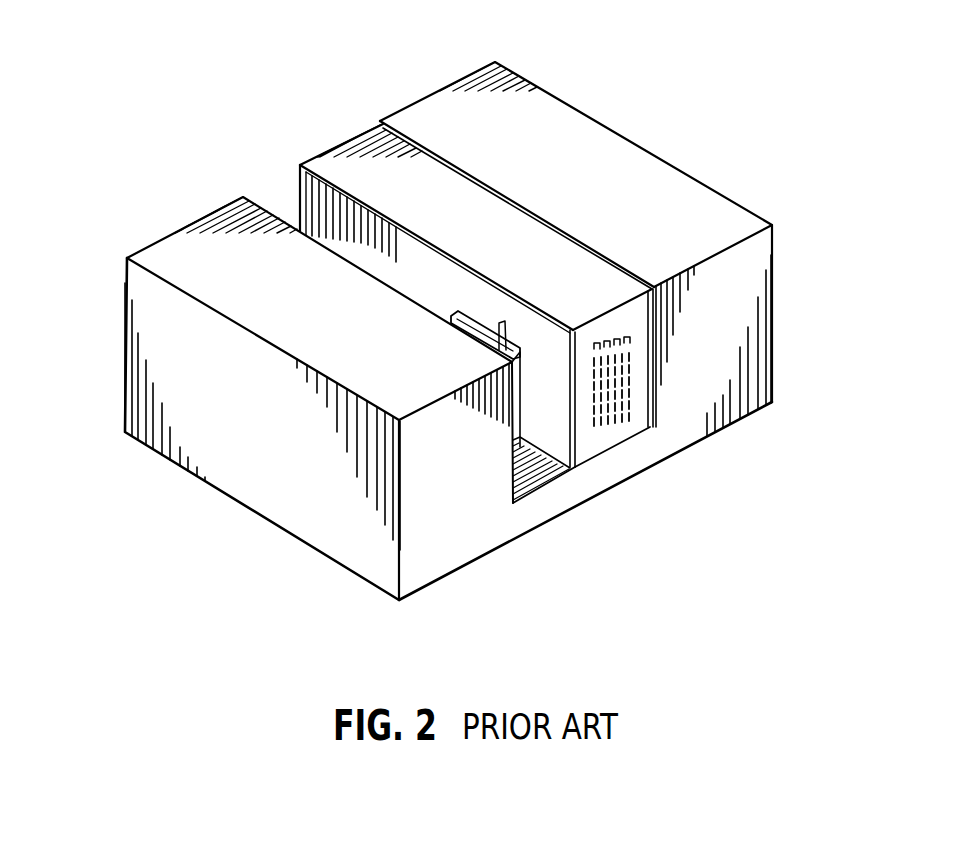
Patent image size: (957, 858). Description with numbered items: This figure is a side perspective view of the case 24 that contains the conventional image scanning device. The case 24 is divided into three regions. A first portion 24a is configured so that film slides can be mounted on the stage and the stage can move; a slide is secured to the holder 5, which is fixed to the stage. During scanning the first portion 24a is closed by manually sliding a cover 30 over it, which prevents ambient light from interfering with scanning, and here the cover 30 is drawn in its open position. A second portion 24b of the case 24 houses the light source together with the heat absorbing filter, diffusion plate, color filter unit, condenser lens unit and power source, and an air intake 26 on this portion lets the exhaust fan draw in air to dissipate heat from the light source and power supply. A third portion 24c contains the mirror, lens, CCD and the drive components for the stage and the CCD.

The case 24 is at (153, 485).
The first portion 24a is at (526, 478).
The second portion 24b is at (445, 103).
The third portion 24c is at (197, 233).
The cover 30 is at (347, 150).
The air intake 26 is at (623, 422).
The holder 5 is at (513, 398).